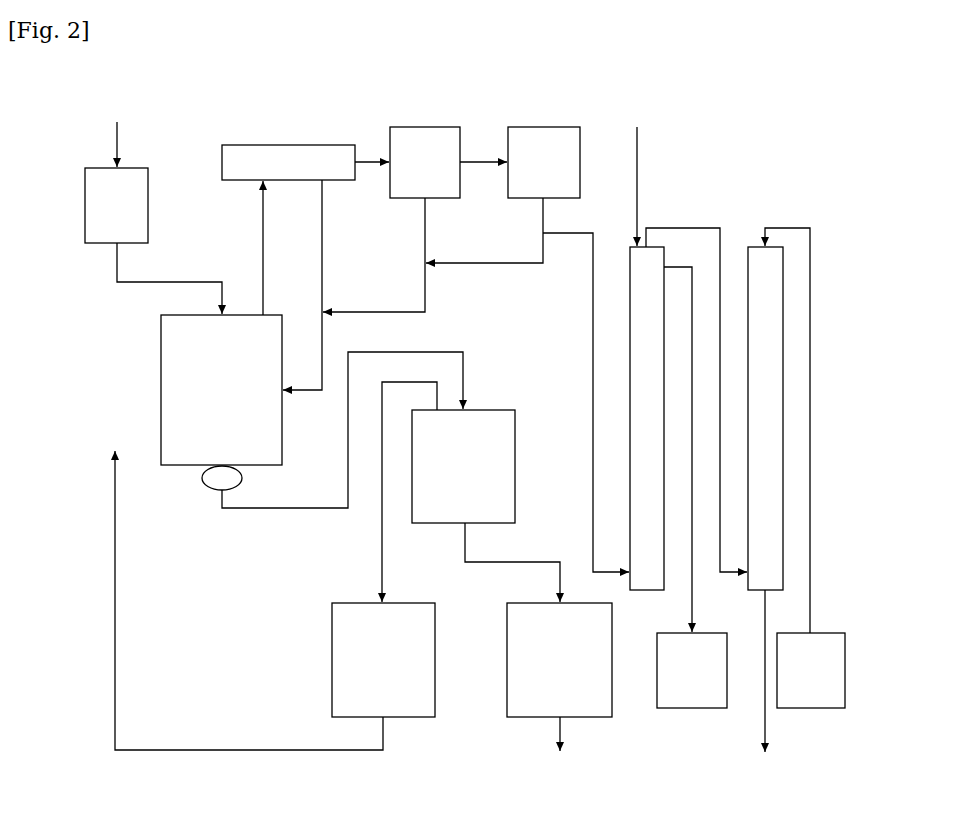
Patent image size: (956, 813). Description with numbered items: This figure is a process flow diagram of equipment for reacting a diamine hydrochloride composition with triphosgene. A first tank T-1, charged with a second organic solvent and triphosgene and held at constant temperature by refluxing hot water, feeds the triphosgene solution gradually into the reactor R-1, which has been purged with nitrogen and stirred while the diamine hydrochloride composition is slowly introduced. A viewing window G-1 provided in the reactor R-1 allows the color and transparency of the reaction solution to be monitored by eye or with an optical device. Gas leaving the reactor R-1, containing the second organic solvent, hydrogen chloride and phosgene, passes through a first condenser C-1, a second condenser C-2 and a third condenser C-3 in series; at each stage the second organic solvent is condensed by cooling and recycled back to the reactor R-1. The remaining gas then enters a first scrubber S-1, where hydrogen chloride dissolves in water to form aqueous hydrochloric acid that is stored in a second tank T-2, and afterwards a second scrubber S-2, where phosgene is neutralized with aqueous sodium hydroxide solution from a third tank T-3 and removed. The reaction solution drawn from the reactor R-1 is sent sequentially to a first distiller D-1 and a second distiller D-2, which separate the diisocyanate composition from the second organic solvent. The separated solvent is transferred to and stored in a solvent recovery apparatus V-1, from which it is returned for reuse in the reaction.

The first tank T-1 is at (135, 168).
The first condenser C-1 is at (298, 145).
The second condenser C-2 is at (428, 127).
The third condenser C-3 is at (548, 127).
The reactor R-1 is at (161, 370).
The viewing window G-1 is at (205, 490).
The first distiller D-1 is at (490, 410).
The solvent recovery apparatus V-1 is at (415, 717).
The second distiller D-2 is at (593, 718).
The first scrubber S-1 is at (657, 247).
The second scrubber S-2 is at (777, 247).
The second tank T-2 is at (703, 708).
The third tank T-3 is at (822, 708).